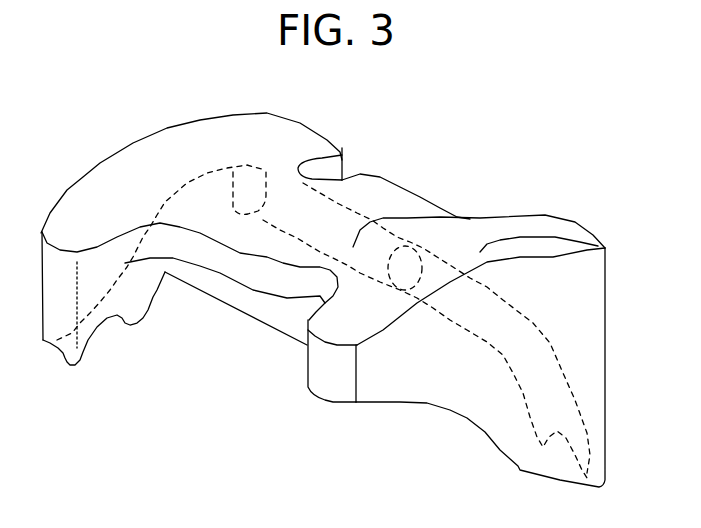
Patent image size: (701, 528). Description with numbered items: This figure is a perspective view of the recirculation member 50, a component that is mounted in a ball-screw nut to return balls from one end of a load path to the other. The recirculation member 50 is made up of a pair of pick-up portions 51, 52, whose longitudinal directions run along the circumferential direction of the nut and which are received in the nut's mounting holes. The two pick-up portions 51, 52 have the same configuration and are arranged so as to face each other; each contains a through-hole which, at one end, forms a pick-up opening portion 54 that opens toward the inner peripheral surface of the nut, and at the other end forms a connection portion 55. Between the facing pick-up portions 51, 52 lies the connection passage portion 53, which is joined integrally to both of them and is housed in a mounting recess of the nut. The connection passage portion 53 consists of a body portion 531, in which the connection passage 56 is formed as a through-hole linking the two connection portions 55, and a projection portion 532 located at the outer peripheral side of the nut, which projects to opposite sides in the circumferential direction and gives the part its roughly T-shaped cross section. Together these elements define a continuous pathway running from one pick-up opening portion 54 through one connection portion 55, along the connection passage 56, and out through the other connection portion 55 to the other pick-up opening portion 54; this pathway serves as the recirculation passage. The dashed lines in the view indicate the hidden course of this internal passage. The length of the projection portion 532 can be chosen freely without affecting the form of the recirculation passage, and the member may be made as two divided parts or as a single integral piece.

The recirculation member 50 is at (117, 142).
The pick-up portion 51 is at (93, 195).
The pick-up portion 52 is at (590, 240).
The connection passage portion 53 is at (370, 212).
The pick-up opening portion 54 is at (65, 352).
The connection portion 55 is at (347, 175).
The connection passage 56 is at (450, 217).
The body portion 531 is at (277, 313).
The projection portion 532 is at (237, 270).